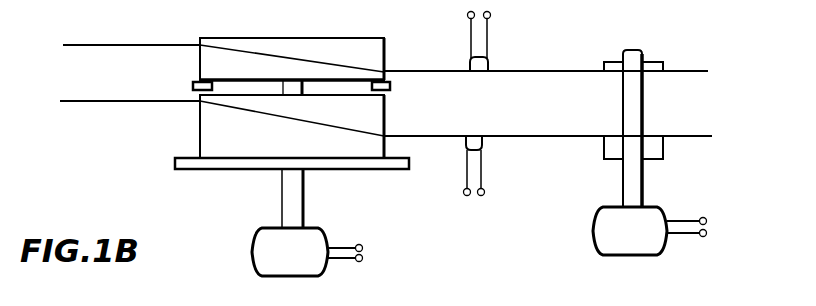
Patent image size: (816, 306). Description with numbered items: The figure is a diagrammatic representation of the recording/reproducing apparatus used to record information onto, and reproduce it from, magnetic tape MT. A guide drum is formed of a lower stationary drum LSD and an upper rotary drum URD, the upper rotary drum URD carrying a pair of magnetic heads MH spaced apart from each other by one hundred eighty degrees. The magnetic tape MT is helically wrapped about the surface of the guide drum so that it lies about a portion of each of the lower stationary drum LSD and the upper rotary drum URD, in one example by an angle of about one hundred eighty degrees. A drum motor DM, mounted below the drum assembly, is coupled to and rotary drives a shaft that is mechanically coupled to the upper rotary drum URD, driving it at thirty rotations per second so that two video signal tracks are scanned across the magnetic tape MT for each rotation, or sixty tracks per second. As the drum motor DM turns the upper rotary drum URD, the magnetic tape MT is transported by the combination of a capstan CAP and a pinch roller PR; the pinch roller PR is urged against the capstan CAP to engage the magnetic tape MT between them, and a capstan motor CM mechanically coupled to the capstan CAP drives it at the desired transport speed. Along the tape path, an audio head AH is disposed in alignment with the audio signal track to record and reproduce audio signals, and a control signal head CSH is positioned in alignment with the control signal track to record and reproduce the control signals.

The magnetic tape MT is at (160, 44).
The upper rotary drum URD is at (354, 37).
The magnetic heads MH is at (193, 84).
The lower stationary drum LSD is at (200, 133).
The drum motor DM is at (307, 222).
The audio head AH is at (490, 61).
The control signal head CSH is at (483, 140).
The pinch roller PR is at (610, 62).
The capstan CAP is at (641, 51).
The capstan motor CM is at (650, 231).